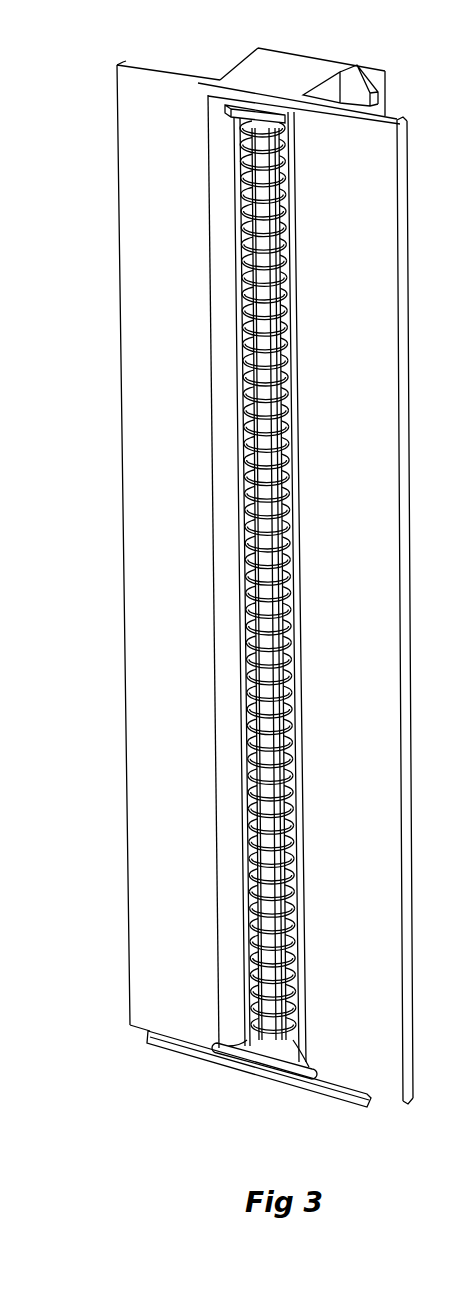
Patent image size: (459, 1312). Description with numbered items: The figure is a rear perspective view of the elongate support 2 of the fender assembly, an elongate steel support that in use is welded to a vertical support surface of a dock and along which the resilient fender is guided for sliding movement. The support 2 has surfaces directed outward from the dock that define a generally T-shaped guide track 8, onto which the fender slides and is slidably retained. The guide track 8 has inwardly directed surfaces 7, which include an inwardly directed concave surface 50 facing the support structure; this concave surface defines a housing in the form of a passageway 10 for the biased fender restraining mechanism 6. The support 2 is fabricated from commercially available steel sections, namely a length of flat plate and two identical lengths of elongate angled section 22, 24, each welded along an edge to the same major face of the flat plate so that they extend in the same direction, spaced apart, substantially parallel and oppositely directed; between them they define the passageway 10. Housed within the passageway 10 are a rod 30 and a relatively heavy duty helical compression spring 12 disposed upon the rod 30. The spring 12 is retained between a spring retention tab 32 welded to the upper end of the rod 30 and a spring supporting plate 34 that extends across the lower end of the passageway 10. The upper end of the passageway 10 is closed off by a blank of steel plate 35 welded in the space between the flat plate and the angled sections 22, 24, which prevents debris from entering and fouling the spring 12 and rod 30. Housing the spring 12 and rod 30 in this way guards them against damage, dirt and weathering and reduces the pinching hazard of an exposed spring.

The elongate support 2 is at (117, 66).
The fender restraining mechanism 6 is at (216, 1063).
The inwardly directed surfaces 7 is at (193, 298).
The guide track 8 is at (327, 56).
The passageway 10 is at (235, 512).
The spring 12 is at (243, 617).
The elongate angled section 22 is at (370, 138).
The elongate angled section 24 is at (132, 86).
The rod 30 is at (243, 693).
The spring retention tab 32 is at (230, 113).
The spring supporting plate 34 is at (262, 1063).
The blank of steel plate 35 is at (253, 80).
The inwardly directed concave surface 50 is at (243, 220).